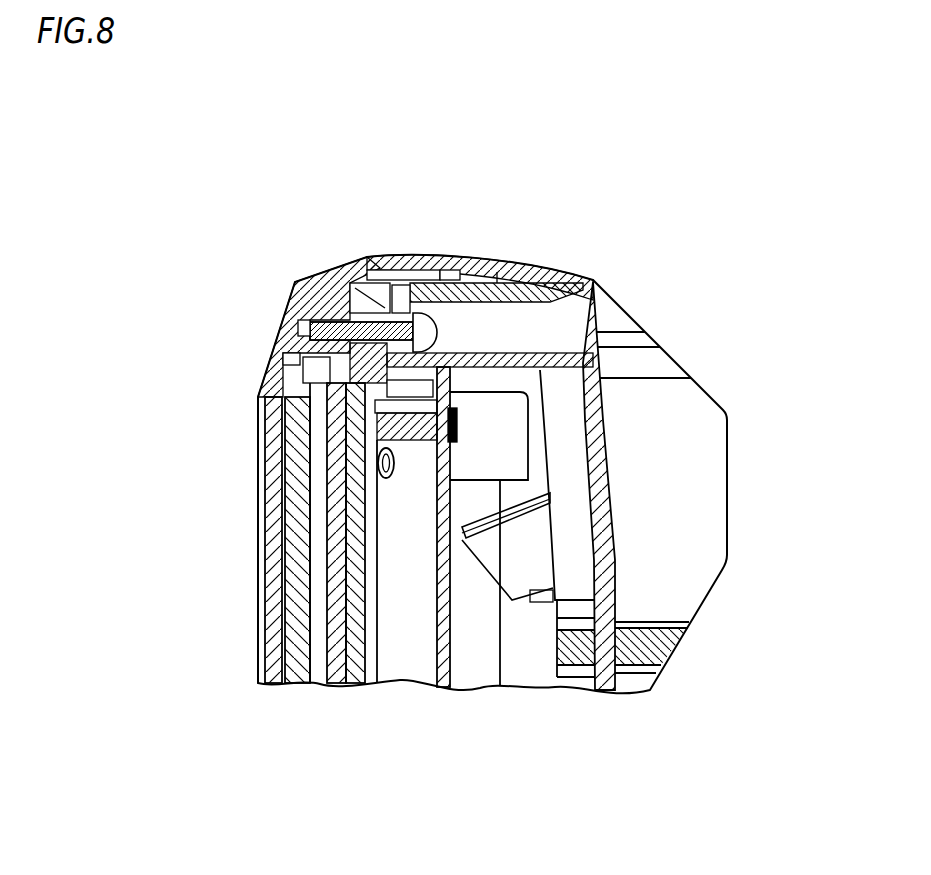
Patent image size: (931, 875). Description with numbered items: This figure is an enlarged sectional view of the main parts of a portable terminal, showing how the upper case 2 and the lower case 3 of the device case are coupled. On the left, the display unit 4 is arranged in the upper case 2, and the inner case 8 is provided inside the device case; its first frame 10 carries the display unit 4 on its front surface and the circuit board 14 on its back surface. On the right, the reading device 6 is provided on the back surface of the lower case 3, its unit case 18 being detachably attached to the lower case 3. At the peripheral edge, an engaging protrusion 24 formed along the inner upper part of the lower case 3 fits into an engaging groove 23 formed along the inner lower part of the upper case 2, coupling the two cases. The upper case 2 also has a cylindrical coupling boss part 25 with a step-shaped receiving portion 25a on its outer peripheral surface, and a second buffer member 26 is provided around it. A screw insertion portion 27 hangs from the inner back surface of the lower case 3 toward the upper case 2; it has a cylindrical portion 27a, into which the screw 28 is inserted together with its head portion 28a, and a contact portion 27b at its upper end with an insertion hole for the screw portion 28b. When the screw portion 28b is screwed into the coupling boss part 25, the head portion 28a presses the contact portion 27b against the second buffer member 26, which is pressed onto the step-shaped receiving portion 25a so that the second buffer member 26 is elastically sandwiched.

The upper case 2 is at (265, 645).
The lower case 3 is at (607, 557).
The display unit 4 is at (293, 515).
The reading device 6 is at (728, 452).
The inner case 8 is at (381, 622).
The first frame 10 is at (370, 572).
The circuit board 14 is at (443, 612).
The unit case 18 is at (710, 490).
The engaging groove 23 is at (378, 270).
The engaging protrusion 24 is at (405, 305).
The coupling boss part 25 is at (340, 307).
The step-shaped receiving portion 25a is at (335, 350).
The second buffer member 26 is at (372, 298).
The screw insertion portion 27 is at (553, 322).
The cylindrical portion 27a is at (537, 272).
The contact portion 27b is at (455, 280).
The screw 28 is at (431, 335).
The head portion 28a is at (497, 272).
The screw portion 28b is at (300, 328).